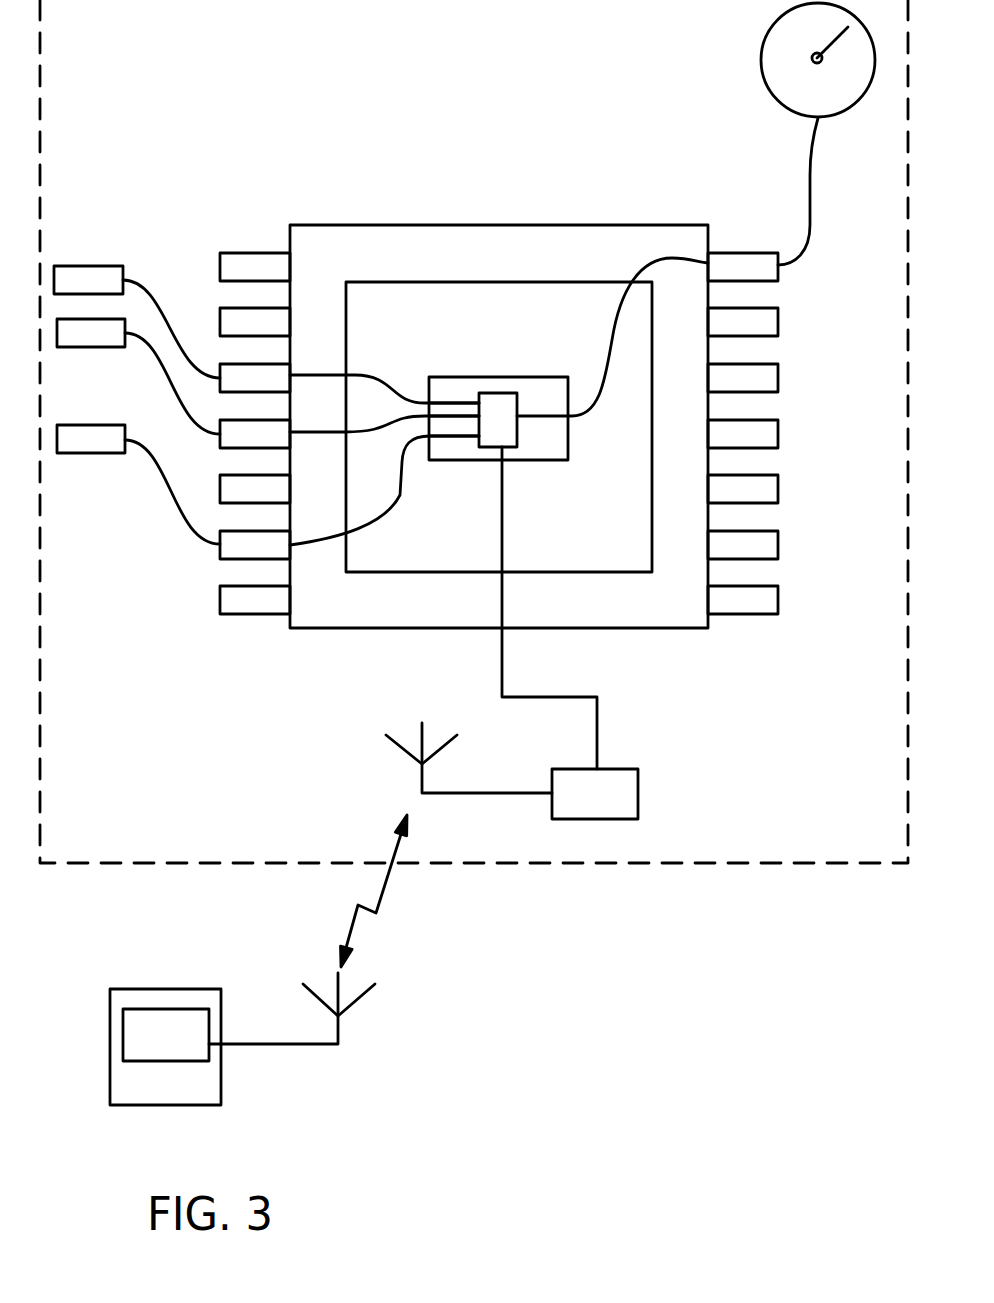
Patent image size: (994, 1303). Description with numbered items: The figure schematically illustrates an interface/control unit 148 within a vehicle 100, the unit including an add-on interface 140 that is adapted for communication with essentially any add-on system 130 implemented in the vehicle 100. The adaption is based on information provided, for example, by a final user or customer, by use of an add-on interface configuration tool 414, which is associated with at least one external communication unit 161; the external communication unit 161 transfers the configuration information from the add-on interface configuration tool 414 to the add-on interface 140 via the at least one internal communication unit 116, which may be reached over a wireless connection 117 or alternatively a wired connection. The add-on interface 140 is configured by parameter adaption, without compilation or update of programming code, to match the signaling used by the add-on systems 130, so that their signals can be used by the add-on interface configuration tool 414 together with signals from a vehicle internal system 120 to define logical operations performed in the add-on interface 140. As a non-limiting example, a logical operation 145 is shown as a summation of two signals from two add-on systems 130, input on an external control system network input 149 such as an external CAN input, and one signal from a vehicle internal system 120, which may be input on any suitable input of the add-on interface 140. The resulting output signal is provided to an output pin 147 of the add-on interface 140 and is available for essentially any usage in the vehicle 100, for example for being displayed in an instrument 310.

The vehicle 100 is at (474, 431).
The instrument 310 is at (818, 134).
The interface/control unit 148 is at (499, 426).
The add-on interface 140 is at (499, 427).
The logical operation 145 is at (498, 400).
The output pin 147 is at (647, 334).
The external control system network input 149 is at (349, 406).
The add-on system 130 is at (137, 350).
The vehicle internal system 120 is at (268, 485).
The internal communication unit 116 is at (512, 633).
The wireless connection 117 is at (394, 891).
The add-on interface configuration tool 414 is at (242, 1039).
The external communication unit 161 is at (166, 1035).